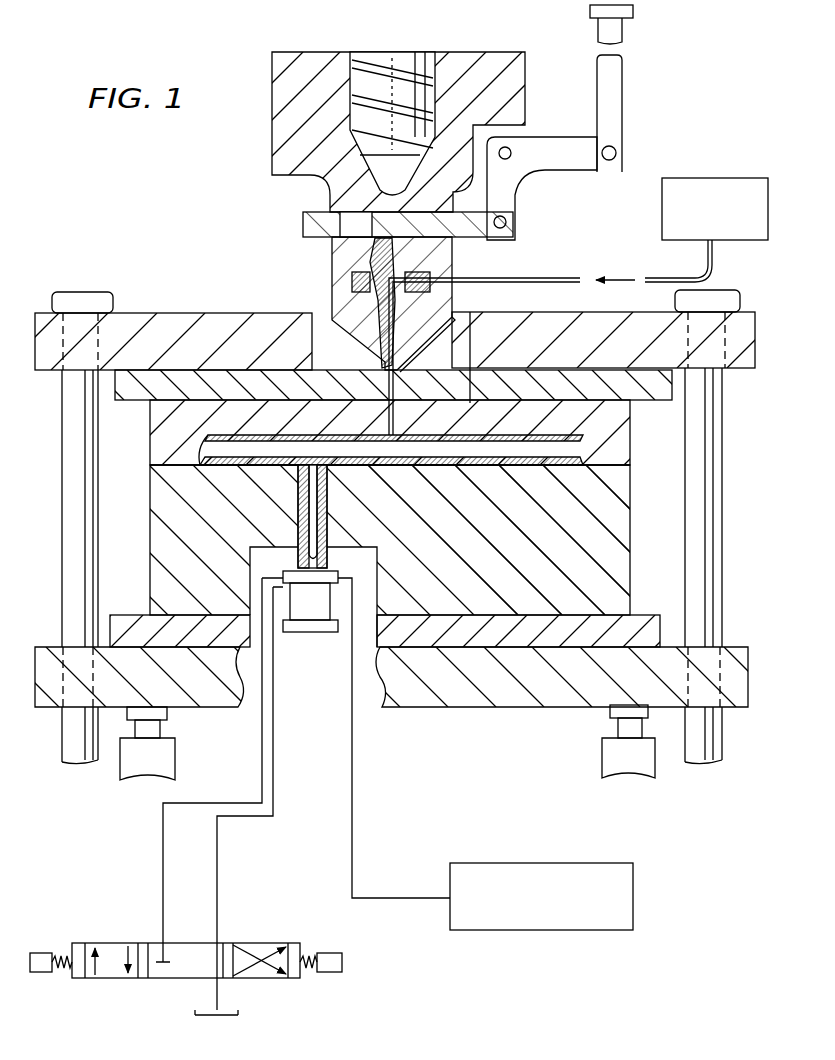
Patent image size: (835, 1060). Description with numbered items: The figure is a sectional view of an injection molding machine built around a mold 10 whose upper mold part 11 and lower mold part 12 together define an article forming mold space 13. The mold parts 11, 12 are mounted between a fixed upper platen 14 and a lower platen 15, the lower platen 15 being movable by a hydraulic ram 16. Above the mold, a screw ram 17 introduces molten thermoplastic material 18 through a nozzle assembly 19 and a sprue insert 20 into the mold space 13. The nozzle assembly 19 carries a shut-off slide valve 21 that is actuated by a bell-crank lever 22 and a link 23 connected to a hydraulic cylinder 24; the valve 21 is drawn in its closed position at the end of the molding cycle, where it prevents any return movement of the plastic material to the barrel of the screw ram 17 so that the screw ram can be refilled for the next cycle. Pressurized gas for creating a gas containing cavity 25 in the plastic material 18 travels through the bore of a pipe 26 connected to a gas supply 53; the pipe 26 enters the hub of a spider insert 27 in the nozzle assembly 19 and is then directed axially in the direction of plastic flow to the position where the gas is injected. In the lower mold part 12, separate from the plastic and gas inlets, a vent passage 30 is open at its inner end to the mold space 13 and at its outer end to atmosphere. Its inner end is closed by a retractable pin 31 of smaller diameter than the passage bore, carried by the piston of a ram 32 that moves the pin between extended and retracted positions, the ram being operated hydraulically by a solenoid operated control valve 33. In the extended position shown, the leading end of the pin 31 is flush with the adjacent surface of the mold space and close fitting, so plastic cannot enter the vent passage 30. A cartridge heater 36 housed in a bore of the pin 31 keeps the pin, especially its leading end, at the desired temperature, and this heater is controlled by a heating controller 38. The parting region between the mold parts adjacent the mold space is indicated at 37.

The mold 10 is at (135, 435).
The upper mold part 11 is at (160, 447).
The lower mold part 12 is at (160, 585).
The article forming mold space 13 is at (590, 443).
The fixed upper platen 14 is at (171, 326).
The lower platen 15 is at (425, 700).
The hydraulic ram 16 is at (157, 758).
The screw ram 17 is at (275, 125).
The molten thermoplastic material 18 is at (352, 298).
The nozzle assembly 19 is at (340, 252).
The sprue insert 20 is at (470, 370).
The shut-off slide valve 21 is at (305, 222).
The bell-crank lever 22 is at (550, 140).
The link 23 is at (620, 108).
The hydraulic cylinder 24 is at (633, 12).
The gas containing cavity 25 is at (545, 470).
The pipe 26 is at (560, 278).
The spider insert 27 is at (420, 262).
The vent passage 30 is at (298, 518).
The pin 31 is at (298, 503).
The ram 32 is at (314, 610).
The solenoid operated control valve 33 is at (130, 943).
The cartridge heater 36 is at (298, 528).
The mold parting surface 37 is at (555, 466).
The heating controller 38 is at (485, 862).
The gas supply 53 is at (725, 178).